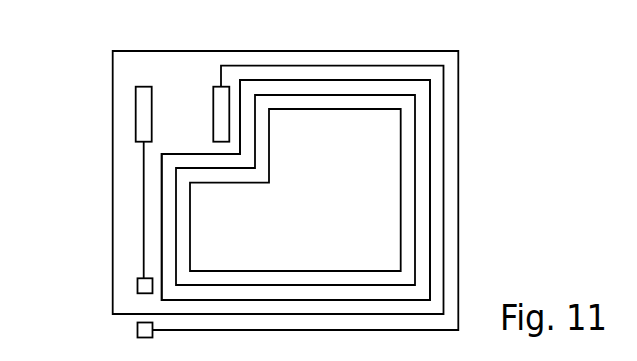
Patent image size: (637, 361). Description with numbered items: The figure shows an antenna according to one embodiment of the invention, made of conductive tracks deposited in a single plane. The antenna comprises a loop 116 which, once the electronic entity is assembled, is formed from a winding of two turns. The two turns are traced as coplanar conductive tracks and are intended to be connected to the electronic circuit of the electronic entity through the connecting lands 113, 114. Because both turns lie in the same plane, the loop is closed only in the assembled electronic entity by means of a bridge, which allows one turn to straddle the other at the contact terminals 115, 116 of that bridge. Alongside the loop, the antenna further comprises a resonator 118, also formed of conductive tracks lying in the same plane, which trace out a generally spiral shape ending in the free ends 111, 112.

The free end 111 is at (430, 83).
The free end 112 is at (377, 110).
The connecting land 113 is at (218, 103).
The connecting land 114 is at (143, 117).
The contact terminal 115 is at (147, 285).
The loop / contact terminal 116 is at (459, 140).
The resonator 118 is at (430, 215).